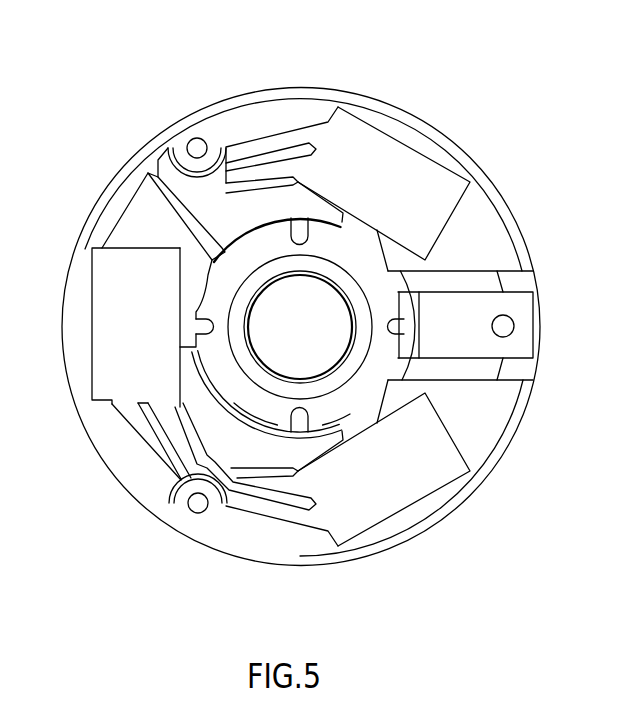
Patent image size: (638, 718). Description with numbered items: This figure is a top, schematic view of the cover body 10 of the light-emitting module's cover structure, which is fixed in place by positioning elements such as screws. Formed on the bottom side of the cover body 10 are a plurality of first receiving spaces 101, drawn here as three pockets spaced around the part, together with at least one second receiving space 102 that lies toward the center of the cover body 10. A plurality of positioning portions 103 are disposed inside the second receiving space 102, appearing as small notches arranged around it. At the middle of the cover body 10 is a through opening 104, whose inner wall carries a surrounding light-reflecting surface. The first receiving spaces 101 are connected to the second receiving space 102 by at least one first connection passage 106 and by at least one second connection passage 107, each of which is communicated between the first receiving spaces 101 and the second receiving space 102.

The cover body 10 is at (89, 50).
The first receiving spaces 101 is at (398, 160).
The second receiving space 102 is at (235, 388).
The positioning portions 103 is at (300, 232).
The through opening 104 is at (292, 357).
The first connection passage 106 is at (158, 188).
The second connection passage 107 is at (283, 440).